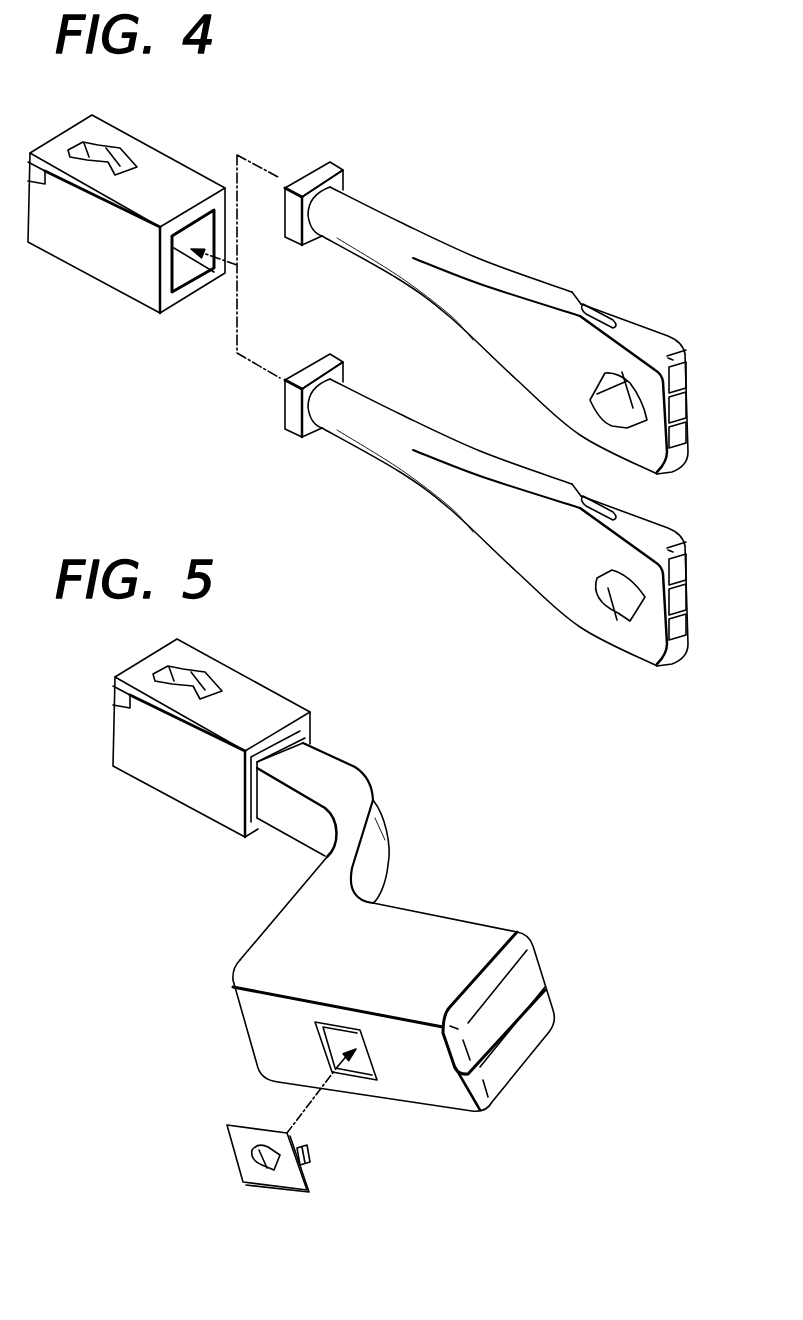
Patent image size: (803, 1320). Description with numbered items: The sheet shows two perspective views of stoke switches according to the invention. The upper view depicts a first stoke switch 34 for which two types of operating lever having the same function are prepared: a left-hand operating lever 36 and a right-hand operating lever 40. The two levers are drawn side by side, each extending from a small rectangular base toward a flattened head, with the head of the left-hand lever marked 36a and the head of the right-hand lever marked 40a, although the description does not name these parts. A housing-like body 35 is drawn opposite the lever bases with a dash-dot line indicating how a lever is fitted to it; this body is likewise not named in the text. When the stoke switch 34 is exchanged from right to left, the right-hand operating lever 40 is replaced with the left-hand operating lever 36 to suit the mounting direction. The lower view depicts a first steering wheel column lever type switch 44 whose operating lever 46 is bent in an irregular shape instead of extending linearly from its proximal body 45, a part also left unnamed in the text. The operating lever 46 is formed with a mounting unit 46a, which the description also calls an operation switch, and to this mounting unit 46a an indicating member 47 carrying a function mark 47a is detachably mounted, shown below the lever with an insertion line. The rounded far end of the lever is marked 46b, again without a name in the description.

In FIG. 4, the first stoke switch 34 is at (236, 152).
In FIG. 4, the receptacle housing 35 is at (167, 160).
In FIG. 4, the left-hand operating lever 36 is at (521, 278).
In FIG. 4, the first plug 36a is at (596, 392).
In FIG. 4, the right-hand operating lever 40 is at (487, 466).
In FIG. 4, the second plug 40a is at (597, 593).
In FIG. 5, the first steering wheel column lever type switch 44 is at (430, 889).
In FIG. 5, the receptacle housing 45 is at (247, 692).
In FIG. 5, the operating lever 46 is at (407, 947).
In FIG. 5, the mounting unit 46a is at (372, 1078).
In FIG. 5, the end portion 46b is at (530, 977).
In FIG. 5, the indicating member 47 is at (261, 1181).
In FIG. 5, the function mark 47a is at (250, 1158).